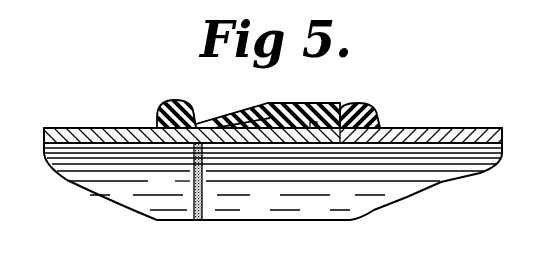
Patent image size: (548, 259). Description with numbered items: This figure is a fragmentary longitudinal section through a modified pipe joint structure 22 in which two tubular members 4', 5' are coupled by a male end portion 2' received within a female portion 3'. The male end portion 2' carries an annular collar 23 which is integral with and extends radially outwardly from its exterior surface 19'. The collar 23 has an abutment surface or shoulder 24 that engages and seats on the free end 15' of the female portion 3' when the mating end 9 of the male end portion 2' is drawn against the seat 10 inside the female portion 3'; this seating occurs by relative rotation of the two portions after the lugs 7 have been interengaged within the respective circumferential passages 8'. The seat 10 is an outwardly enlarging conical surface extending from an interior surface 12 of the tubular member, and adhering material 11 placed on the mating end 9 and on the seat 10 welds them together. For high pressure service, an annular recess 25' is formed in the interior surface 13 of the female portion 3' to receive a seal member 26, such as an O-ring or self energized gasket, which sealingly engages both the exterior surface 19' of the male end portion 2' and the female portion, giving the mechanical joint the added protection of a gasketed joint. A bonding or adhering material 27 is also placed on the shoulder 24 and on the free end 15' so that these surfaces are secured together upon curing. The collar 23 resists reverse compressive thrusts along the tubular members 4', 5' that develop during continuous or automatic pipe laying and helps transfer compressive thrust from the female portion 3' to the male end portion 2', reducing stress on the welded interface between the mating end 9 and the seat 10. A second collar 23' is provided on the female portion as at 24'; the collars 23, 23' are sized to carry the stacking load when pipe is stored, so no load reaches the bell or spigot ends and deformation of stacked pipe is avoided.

The male end portion 2' is at (253, 233).
The female portion 3' is at (273, 103).
The tubular member 4' is at (421, 120).
The tubular member 5' is at (266, 155).
The lug 7 is at (318, 156).
The circumferential passage 8' is at (304, 103).
The mating end 9 is at (245, 162).
The seat 10 is at (192, 170).
The adhering material 11 is at (216, 162).
The interior surface 12 is at (98, 142).
The interior surface 13 is at (240, 165).
The free end 15' is at (321, 102).
The exterior surface 19' is at (410, 120).
The pipe joint structure 22 is at (195, 106).
The annular collar 23 is at (391, 110).
The collar 23' is at (171, 108).
The shoulder 24 is at (369, 105).
The collar location on female portion 24' is at (215, 108).
The annular recess 25' is at (273, 174).
The seal member 26 is at (291, 153).
The bonding material 27 is at (358, 155).